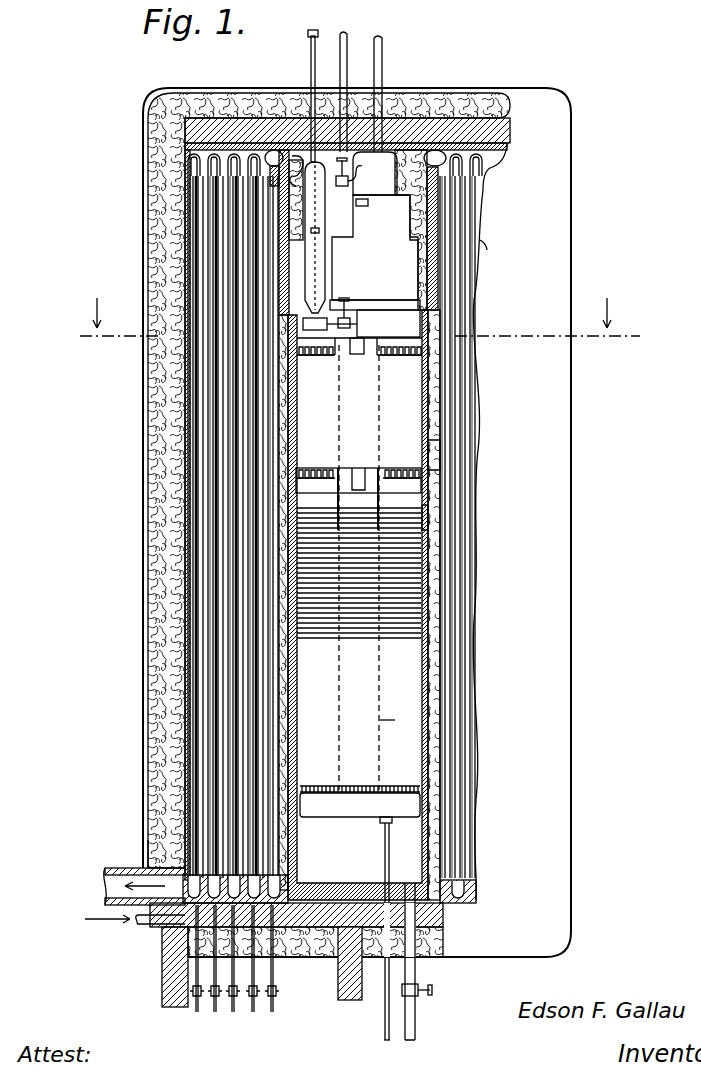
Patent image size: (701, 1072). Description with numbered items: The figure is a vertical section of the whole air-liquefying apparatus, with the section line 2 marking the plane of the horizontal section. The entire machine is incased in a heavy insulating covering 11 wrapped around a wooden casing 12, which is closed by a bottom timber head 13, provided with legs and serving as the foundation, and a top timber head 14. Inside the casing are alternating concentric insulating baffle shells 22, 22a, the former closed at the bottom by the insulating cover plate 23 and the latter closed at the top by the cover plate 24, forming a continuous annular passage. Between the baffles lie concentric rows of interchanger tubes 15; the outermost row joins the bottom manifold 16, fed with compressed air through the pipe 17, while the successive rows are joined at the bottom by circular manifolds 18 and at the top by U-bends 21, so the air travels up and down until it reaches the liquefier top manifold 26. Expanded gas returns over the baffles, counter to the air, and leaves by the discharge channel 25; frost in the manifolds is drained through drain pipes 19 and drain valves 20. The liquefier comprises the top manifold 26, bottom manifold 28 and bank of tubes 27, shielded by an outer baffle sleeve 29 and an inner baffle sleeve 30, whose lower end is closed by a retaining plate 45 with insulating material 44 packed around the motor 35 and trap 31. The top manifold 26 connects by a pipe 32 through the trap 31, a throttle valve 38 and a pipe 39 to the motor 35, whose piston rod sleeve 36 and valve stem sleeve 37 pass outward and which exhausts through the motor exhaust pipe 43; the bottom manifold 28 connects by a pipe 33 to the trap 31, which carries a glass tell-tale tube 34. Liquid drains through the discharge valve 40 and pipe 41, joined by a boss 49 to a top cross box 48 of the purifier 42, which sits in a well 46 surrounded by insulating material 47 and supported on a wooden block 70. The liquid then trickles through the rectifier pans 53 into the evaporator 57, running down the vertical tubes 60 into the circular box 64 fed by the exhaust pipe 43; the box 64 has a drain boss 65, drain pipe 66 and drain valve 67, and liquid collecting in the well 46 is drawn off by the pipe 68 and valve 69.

The section line 2 is at (361, 323).
The insulating covering 11 is at (480, 118).
The wooden casing 12 is at (150, 150).
The bottom timber head 13 is at (325, 960).
The top timber head 14 is at (503, 113).
The interchanger tubes 15 is at (273, 460).
The bottom outermost manifold 16 is at (150, 868).
The inlet pipe 17 is at (137, 922).
The circular manifolds 18 is at (197, 925).
The drain pipes 19 is at (273, 967).
The drain valves 20 is at (272, 1002).
The U-bends 21 is at (183, 128).
The insulating baffle shells 22 is at (278, 246).
The insulating baffle shells 22a is at (523, 826).
The bottom insulating cover plate 23 is at (302, 957).
The top insulating cover plate 24 is at (252, 120).
The discharge channel 25 is at (108, 890).
The liquefier top manifold 26 is at (298, 150).
The liquefier tubes 27 is at (487, 242).
The liquefier bottom manifold 28 is at (282, 312).
The outer insulating baffle sleeve 29 is at (440, 218).
The inner insulating baffle sleeve 30 is at (427, 188).
The trap 31 is at (326, 256).
The pipe 32 is at (305, 158).
The pipe 33 is at (278, 330).
The glass tell-tale tube 34 is at (312, 62).
The motor 35 is at (376, 190).
The piston rod sleeve 36 is at (382, 62).
The valve stem sleeve 37 is at (347, 60).
The throttle valve 38 is at (365, 206).
The pipe 39 is at (360, 174).
The discharge valve 40 is at (364, 318).
The discharge pipe 41 is at (378, 340).
The purifier 42 is at (359, 567).
The motor exhaust pipe 43 is at (437, 313).
The insulating material 44 is at (417, 175).
The insulating retaining plate 45 is at (313, 287).
The well 46 is at (440, 457).
The insulating material 47 is at (430, 518).
The cross connecting boxes 48 is at (358, 340).
The boss 49 is at (362, 345).
The rectifier pans 53 is at (440, 560).
The evaporator 57 is at (390, 725).
The vertical tubes 60 is at (403, 783).
The hollow flattened circular box 64 is at (403, 806).
The drain boss 65 is at (380, 821).
The drain pipe 66 is at (385, 867).
The drain valve 67 is at (387, 1000).
The pipe 68 is at (445, 918).
The valve 69 is at (420, 995).
The wooden block 70 is at (348, 1002).